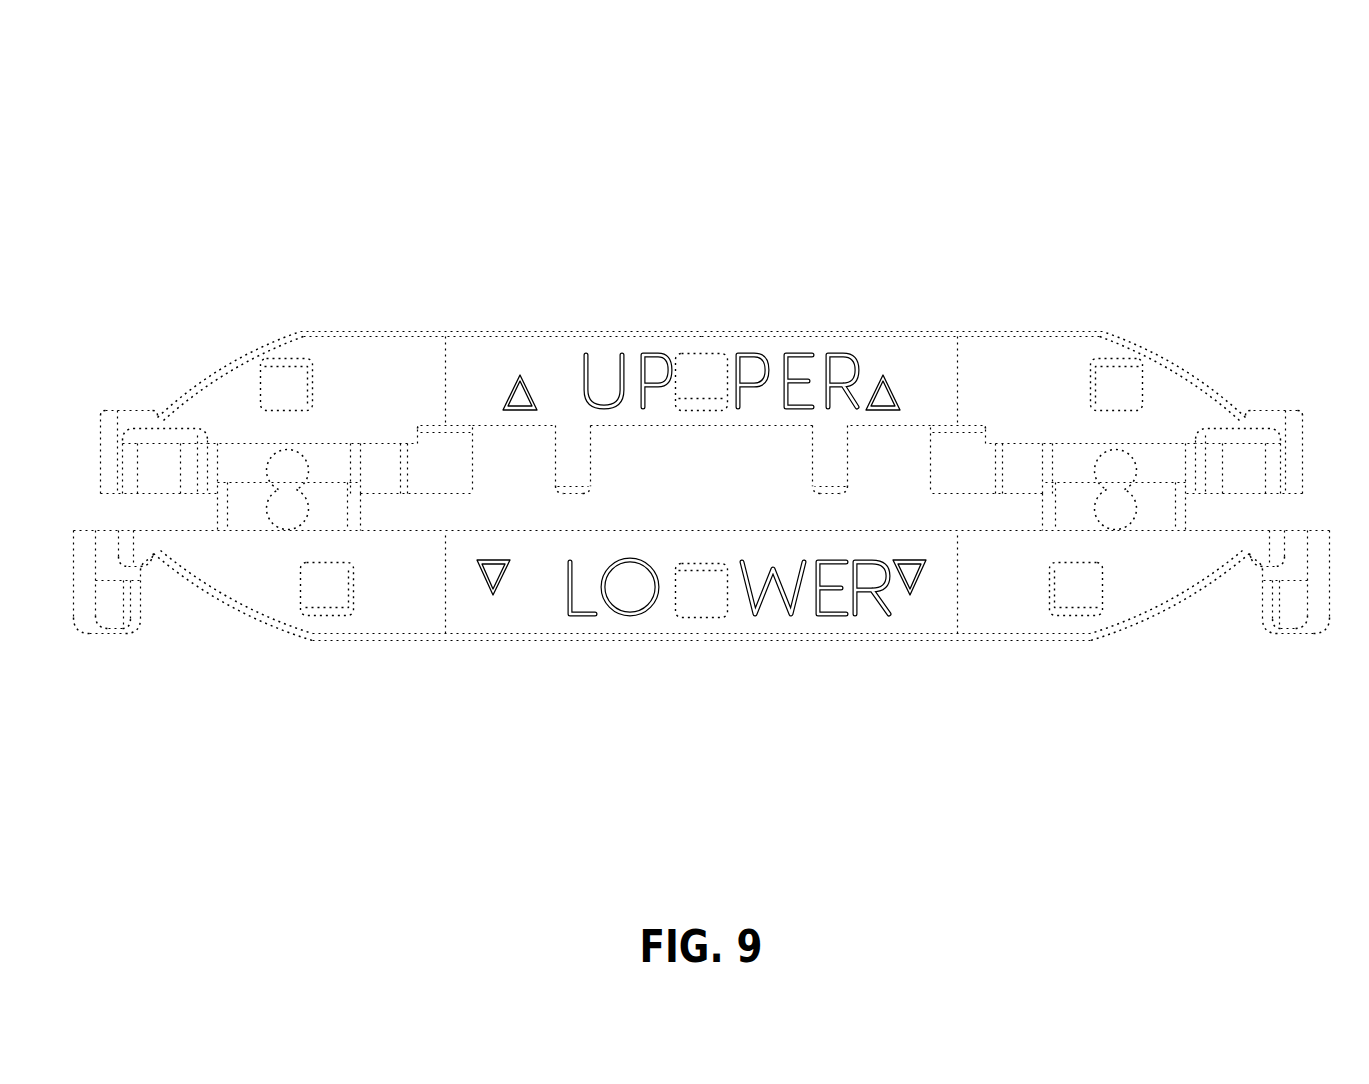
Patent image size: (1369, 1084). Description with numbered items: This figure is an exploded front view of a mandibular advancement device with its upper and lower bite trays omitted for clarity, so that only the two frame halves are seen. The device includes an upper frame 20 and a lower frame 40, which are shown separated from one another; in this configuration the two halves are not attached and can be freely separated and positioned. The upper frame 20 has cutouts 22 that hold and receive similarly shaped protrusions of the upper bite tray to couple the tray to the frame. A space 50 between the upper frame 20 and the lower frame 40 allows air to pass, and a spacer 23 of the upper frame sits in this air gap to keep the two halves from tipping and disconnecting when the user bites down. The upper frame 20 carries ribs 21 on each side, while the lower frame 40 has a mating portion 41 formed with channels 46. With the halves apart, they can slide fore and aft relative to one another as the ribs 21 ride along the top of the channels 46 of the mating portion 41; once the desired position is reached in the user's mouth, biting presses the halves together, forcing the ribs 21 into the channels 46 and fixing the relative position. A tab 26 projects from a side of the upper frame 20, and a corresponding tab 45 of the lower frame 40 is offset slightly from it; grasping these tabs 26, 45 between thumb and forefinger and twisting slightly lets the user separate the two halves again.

The upper frame 20 is at (398, 402).
The ribs 21 is at (1127, 464).
The cutouts 22 is at (1085, 593).
The spacer 23 is at (827, 462).
The tab 26 is at (1238, 465).
The lower frame 40 is at (407, 597).
The mating portion 41 is at (1062, 495).
The tab 45 is at (1312, 633).
The channels 46 is at (1108, 502).
The space 50 is at (725, 462).